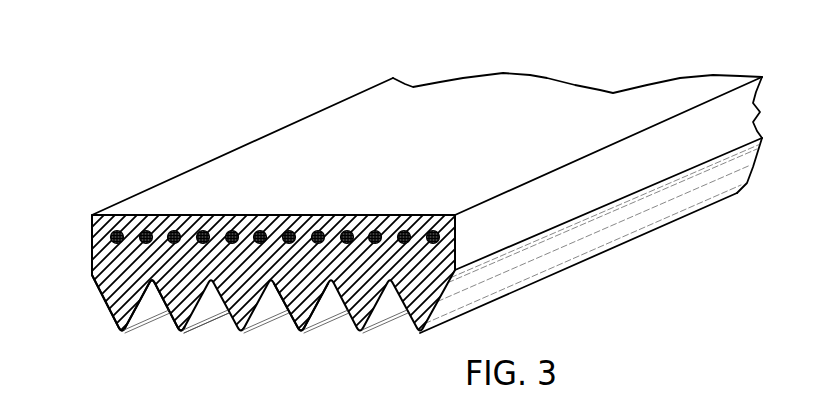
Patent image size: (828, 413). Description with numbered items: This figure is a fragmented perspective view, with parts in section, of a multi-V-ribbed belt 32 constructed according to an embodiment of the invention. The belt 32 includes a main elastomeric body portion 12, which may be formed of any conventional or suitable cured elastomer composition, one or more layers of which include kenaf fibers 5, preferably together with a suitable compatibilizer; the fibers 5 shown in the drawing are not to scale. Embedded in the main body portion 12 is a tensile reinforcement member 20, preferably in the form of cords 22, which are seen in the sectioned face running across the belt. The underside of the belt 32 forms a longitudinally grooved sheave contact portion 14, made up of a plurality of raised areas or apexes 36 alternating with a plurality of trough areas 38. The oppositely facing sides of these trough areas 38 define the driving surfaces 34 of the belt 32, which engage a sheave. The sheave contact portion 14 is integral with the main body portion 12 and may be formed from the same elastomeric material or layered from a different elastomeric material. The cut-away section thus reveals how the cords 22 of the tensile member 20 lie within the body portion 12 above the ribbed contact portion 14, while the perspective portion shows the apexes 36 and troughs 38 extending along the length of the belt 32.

The main elastomeric body portion 12 is at (580, 110).
The multi-V-ribbed belt 32 is at (243, 112).
The sheave contact portion 14 is at (557, 276).
The tensile reinforcement member 20 is at (104, 232).
The cords 22 is at (165, 214).
The raised areas or apexes 36 is at (183, 337).
The trough areas 38 is at (208, 323).
The driving surfaces 34 is at (270, 300).
The kenaf fibers 5 is at (322, 292).